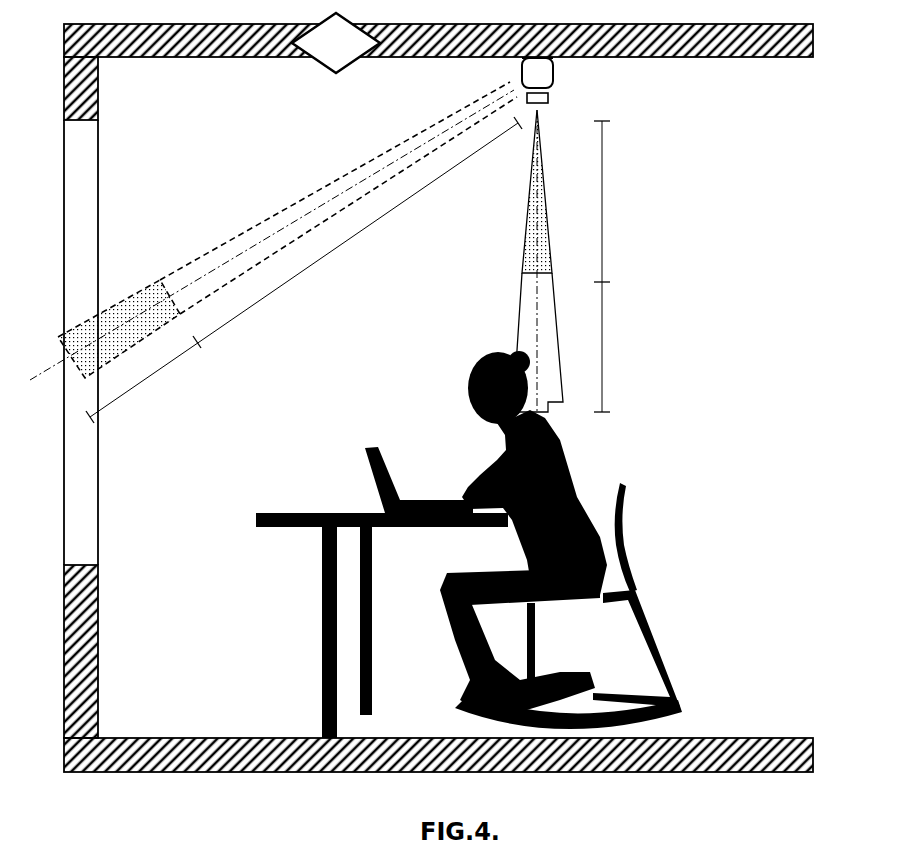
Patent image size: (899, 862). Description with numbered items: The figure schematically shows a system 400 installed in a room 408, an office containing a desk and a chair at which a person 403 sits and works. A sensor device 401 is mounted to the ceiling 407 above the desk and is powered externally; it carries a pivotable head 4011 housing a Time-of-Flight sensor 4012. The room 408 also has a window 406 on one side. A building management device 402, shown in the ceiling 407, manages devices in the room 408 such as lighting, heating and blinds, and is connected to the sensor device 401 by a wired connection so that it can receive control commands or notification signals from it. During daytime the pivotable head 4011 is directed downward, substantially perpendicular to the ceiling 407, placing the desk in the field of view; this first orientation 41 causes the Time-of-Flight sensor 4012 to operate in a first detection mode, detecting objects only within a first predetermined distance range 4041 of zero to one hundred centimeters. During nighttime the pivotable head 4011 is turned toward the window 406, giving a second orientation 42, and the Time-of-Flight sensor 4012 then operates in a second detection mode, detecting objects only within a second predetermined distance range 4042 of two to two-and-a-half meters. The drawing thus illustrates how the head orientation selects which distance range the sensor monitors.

The system 400 is at (770, 182).
The sensor device 401 is at (520, 68).
The pivotable head 4011 is at (572, 88).
The Time-of-Flight sensor 4012 is at (549, 98).
The building management device 402 is at (328, 66).
The person 403 is at (470, 370).
The window 406 is at (98, 152).
The ceiling 407 is at (190, 58).
The room 408 is at (719, 445).
The first orientation 41 is at (537, 302).
The first predetermined distance range 4041 is at (572, 193).
The second orientation 42 is at (52, 370).
The second predetermined distance range 4042 is at (148, 337).